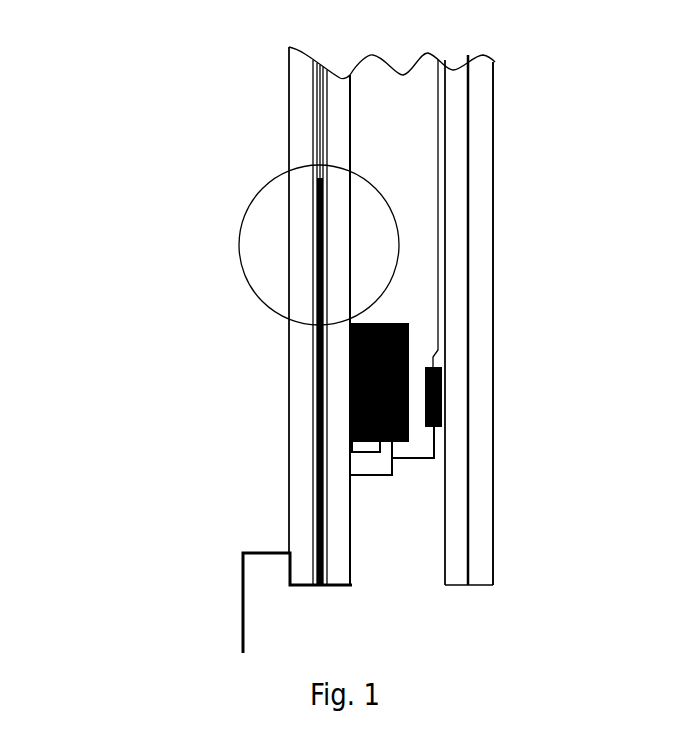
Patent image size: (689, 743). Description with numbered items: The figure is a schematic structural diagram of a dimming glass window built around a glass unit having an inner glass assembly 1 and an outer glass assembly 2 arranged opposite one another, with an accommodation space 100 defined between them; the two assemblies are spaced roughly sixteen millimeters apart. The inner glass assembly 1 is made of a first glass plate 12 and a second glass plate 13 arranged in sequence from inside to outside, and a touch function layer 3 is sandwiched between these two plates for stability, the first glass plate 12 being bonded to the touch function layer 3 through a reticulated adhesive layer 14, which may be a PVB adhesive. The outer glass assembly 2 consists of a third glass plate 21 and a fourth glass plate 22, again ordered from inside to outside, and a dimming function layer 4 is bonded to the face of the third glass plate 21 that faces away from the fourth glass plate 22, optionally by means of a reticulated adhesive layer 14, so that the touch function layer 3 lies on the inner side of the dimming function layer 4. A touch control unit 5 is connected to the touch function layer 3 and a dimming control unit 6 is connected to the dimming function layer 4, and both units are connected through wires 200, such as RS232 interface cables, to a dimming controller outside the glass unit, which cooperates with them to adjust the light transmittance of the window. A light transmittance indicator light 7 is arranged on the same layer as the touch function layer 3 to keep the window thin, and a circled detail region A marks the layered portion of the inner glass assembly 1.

The accommodation space 100 is at (370, 90).
The inner glass assembly 1 is at (95, 10).
The first glass plate 12 is at (302, 140).
The second glass plate 13 is at (337, 107).
The reticulated adhesive layer 14 is at (289, 170).
The light transmittance indicator light 7 is at (315, 275).
The touch function layer 3 is at (320, 427).
The detail region A is at (243, 278).
The wire 200 is at (242, 598).
The outer glass assembly 2 is at (603, 408).
The third glass plate 21 is at (455, 457).
The fourth glass plate 22 is at (478, 493).
The dimming function layer 4 is at (438, 285).
The touch control unit 5 is at (410, 350).
The dimming control unit 6 is at (443, 397).